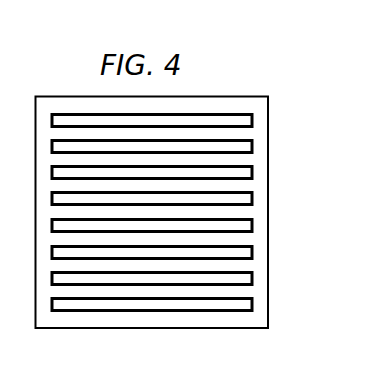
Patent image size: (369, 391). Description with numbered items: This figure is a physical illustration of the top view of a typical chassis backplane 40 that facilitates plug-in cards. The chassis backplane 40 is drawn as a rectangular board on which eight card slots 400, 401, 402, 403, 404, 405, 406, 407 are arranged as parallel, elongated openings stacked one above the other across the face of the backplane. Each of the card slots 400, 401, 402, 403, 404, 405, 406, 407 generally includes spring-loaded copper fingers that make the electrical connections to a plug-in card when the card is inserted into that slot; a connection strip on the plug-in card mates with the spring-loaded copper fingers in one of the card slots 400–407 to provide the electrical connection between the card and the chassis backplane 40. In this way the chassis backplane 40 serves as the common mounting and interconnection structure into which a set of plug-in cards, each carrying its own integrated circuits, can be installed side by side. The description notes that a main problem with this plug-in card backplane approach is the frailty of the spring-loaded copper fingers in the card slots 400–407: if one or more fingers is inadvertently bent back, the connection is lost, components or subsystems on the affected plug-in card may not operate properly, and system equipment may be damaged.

The chassis backplane 40 is at (266, 63).
The card slot 400 is at (252, 120).
The card slot 401 is at (252, 146).
The card slot 402 is at (252, 172).
The card slot 403 is at (252, 198).
The card slot 404 is at (252, 225).
The card slot 405 is at (252, 252).
The card slot 406 is at (252, 278).
The card slot 407 is at (252, 304).